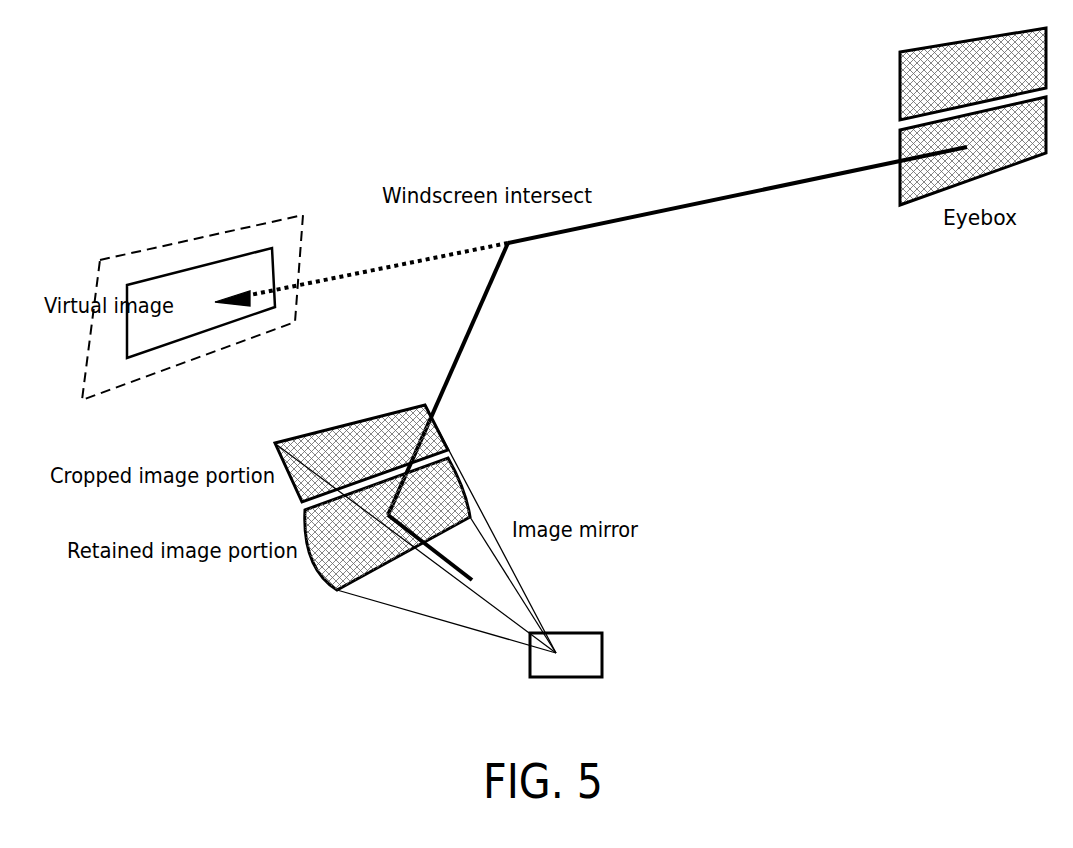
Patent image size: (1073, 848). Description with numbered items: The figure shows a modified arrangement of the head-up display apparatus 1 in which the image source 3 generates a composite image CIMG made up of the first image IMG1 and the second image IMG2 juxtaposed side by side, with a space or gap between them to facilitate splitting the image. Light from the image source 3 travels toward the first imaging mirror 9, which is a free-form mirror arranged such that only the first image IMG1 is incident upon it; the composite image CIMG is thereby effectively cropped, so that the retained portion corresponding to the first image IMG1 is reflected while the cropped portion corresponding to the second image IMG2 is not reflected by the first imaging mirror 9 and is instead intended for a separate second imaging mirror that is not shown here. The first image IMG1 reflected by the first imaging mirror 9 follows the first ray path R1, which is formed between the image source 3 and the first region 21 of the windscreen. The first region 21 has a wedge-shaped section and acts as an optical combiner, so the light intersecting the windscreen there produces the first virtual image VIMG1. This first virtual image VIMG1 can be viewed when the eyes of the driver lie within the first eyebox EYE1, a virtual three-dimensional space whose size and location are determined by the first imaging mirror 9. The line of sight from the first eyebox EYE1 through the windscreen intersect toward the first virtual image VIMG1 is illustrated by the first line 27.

The head-up display apparatus 1 is at (738, 535).
The image source 3 is at (602, 647).
The first imaging mirror 9 is at (317, 567).
The first region 21 is at (240, 228).
The first line 27 is at (663, 210).
The first ray path R1 is at (462, 357).
The first image IMG1 is at (458, 487).
The second image IMG2 is at (442, 438).
The composite image CIMG is at (415, 592).
The first eyebox EYE1 is at (907, 148).
The first virtual image VIMG1 is at (173, 283).